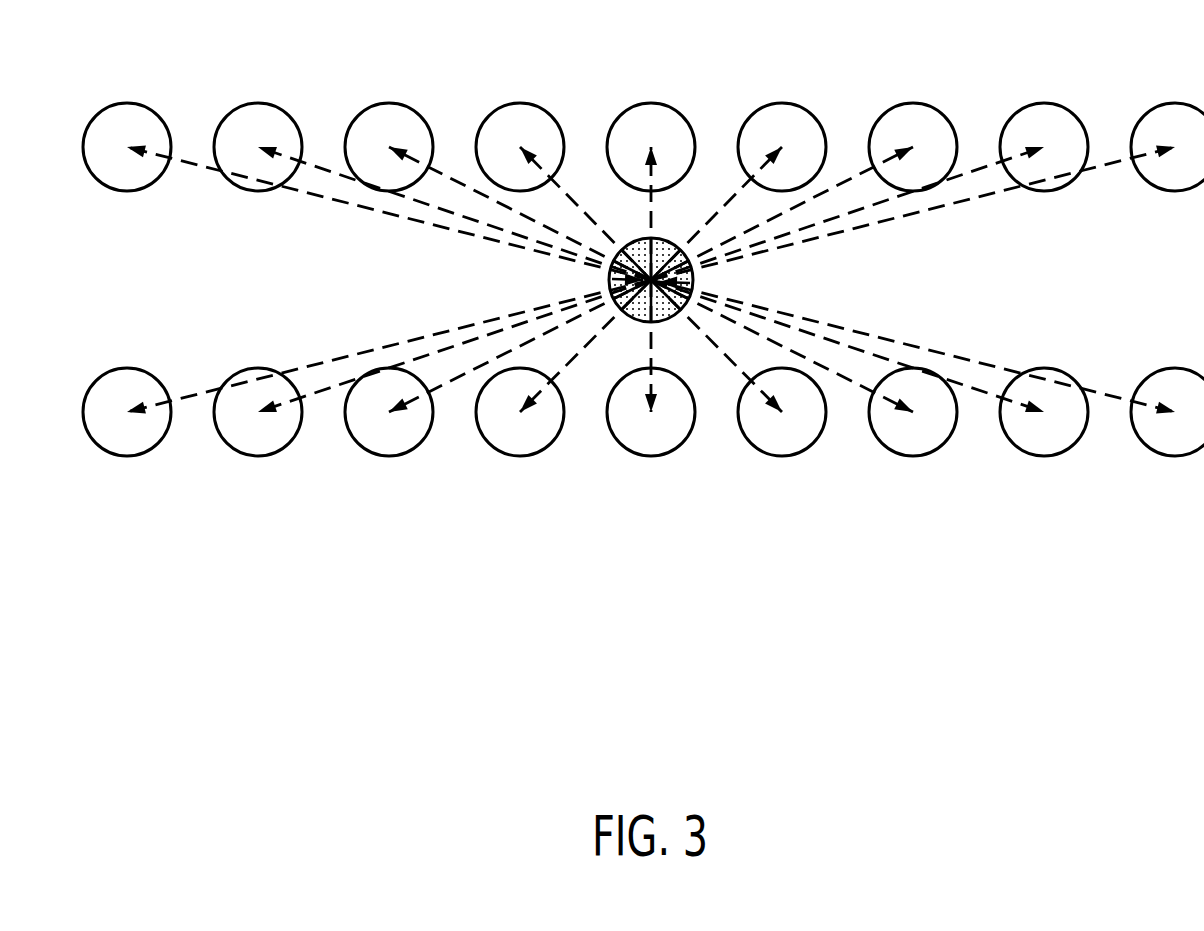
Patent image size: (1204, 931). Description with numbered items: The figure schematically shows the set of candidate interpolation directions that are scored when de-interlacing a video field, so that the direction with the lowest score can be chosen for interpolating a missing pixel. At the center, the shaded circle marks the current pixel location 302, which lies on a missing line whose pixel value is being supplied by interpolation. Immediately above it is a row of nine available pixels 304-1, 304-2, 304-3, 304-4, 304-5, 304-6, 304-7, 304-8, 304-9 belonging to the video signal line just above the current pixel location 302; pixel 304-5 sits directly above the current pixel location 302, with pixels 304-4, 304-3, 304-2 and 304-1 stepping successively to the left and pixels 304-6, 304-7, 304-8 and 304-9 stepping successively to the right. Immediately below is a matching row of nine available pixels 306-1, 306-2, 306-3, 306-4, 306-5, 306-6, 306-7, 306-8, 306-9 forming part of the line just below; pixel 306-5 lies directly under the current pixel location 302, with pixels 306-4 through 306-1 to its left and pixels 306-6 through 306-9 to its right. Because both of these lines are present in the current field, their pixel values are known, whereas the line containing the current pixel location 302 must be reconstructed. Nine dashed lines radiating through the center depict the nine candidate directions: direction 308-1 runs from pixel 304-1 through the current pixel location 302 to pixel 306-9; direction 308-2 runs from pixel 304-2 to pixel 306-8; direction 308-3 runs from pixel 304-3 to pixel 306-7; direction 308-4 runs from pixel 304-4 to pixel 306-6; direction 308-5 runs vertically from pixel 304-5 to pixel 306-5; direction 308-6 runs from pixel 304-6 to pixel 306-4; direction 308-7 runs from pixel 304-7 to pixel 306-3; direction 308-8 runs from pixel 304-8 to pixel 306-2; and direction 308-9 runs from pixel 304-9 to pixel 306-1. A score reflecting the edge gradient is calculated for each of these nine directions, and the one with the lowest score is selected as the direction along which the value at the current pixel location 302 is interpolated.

The current pixel location 302 is at (693, 284).
The pixel 304-1 is at (103, 110).
The pixel 304-2 is at (233, 110).
The pixel 304-3 is at (364, 112).
The pixel 304-4 is at (494, 113).
The pixel 304-5 is at (619, 116).
The pixel 304-6 is at (749, 116).
The pixel 304-7 is at (877, 121).
The pixel 304-8 is at (1007, 122).
The pixel 304-9 is at (1141, 117).
The pixel 306-1 is at (90, 438).
The pixel 306-2 is at (221, 438).
The pixel 306-3 is at (352, 438).
The pixel 306-4 is at (483, 438).
The pixel 306-5 is at (614, 438).
The pixel 306-6 is at (745, 438).
The pixel 306-7 is at (876, 438).
The pixel 306-8 is at (1007, 438).
The pixel 306-9 is at (1138, 438).
The interpolation direction 308-1 is at (366, 208).
The interpolation direction 308-2 is at (455, 222).
The interpolation direction 308-3 is at (548, 232).
The interpolation direction 308-4 is at (578, 208).
The interpolation direction 308-5 is at (695, 236).
The interpolation direction 308-6 is at (651, 238).
The interpolation direction 308-7 is at (785, 213).
The interpolation direction 308-8 is at (842, 215).
The interpolation direction 308-9 is at (940, 208).